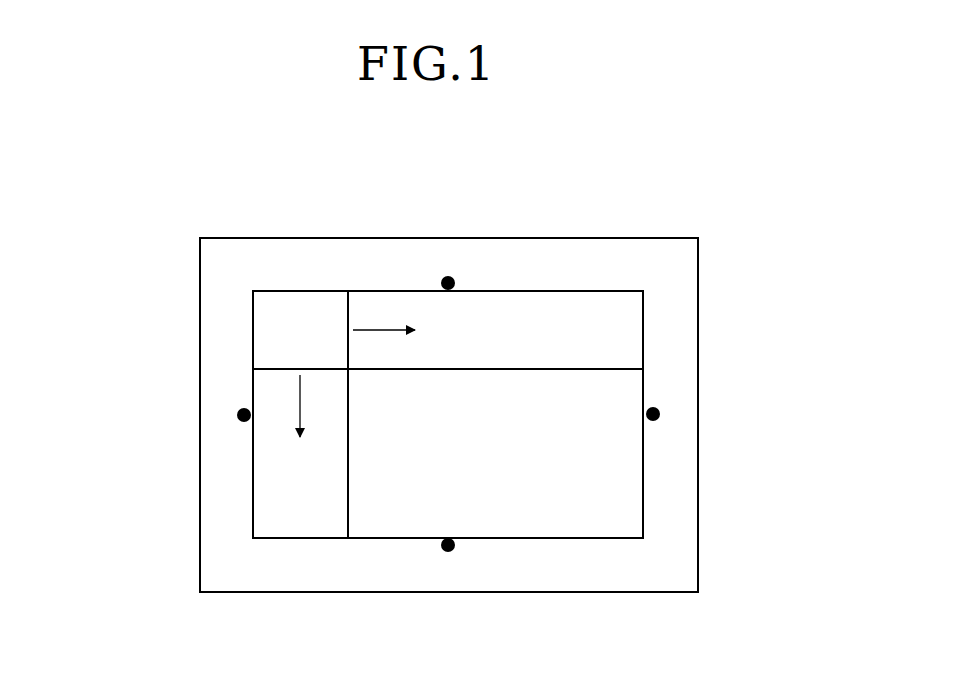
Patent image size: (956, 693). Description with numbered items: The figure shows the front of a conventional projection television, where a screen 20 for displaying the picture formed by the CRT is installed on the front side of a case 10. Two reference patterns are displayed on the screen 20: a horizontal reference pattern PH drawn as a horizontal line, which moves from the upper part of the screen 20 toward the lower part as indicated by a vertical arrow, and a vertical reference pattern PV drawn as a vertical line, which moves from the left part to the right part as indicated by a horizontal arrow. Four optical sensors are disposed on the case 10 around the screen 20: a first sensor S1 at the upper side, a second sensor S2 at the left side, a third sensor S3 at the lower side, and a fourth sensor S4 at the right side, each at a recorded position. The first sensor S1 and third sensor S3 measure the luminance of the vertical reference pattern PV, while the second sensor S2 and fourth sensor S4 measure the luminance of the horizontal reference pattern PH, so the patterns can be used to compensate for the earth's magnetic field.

The case 10 is at (590, 253).
The screen 20 is at (632, 302).
The vertical reference pattern PV is at (348, 305).
The horizontal reference pattern PH is at (273, 368).
The first sensor S1 is at (448, 283).
The second sensor S2 is at (244, 415).
The third sensor S3 is at (448, 545).
The fourth sensor S4 is at (653, 414).